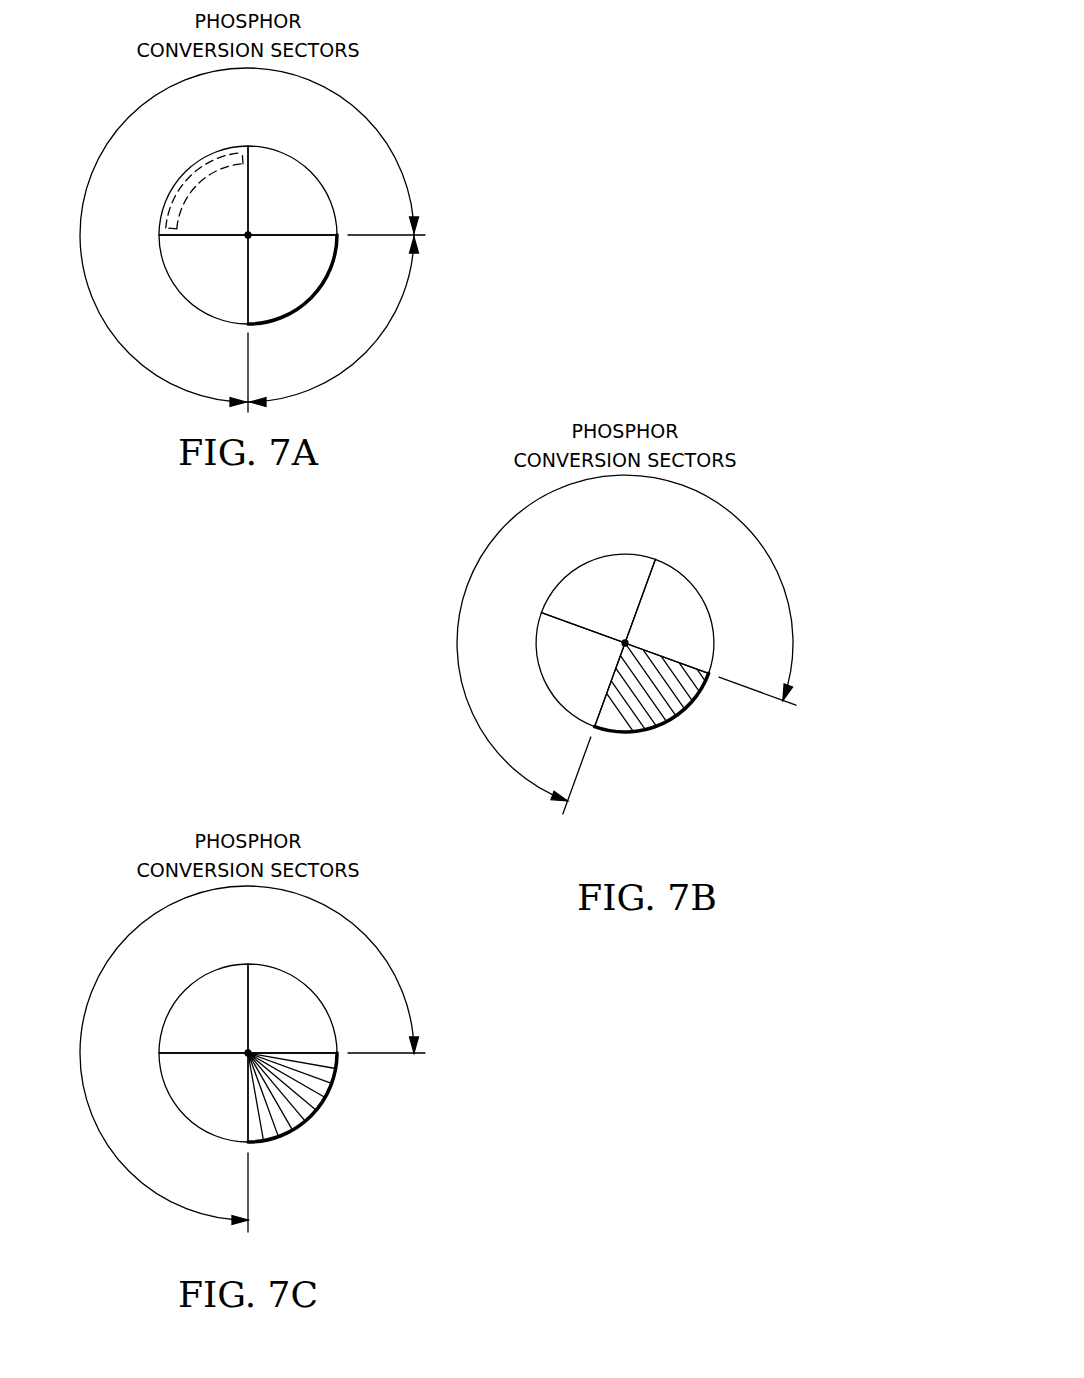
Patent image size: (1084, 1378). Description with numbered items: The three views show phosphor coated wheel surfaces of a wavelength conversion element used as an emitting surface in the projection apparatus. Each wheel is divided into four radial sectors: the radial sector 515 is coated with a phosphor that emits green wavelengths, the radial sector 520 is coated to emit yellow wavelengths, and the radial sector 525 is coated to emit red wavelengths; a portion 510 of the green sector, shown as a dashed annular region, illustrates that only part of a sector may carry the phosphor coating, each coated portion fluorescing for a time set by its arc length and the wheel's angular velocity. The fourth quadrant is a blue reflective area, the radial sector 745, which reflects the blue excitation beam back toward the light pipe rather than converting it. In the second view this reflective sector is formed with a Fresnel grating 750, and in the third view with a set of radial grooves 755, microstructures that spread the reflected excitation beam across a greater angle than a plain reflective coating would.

In FIG. 7A, the portion of a radial sector 510 is at (204, 160).
In FIG. 7A, the radial sector 515 is at (184, 236).
In FIG. 7B, the radial sector 515 is at (590, 573).
In FIG. 7C, the radial sector 515 is at (200, 990).
In FIG. 7A, the radial sector 520 is at (297, 166).
In FIG. 7B, the radial sector 520 is at (682, 585).
In FIG. 7C, the radial sector 520 is at (297, 990).
In FIG. 7A, the radial sector 525 is at (200, 298).
In FIG. 7B, the radial sector 525 is at (562, 700).
In FIG. 7C, the radial sector 525 is at (200, 1118).
In FIG. 7A, the radial sector 745 is at (292, 300).
In FIG. 7B, the Fresnel grating 750 is at (680, 707).
In FIG. 7C, the radial grooves 755 is at (310, 1100).